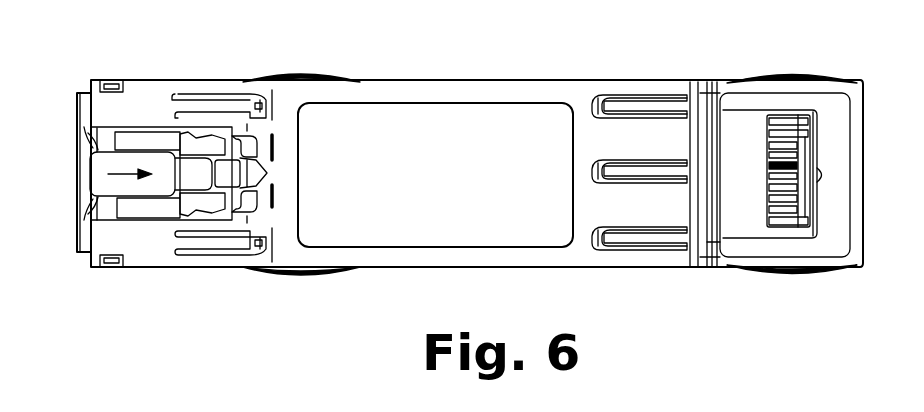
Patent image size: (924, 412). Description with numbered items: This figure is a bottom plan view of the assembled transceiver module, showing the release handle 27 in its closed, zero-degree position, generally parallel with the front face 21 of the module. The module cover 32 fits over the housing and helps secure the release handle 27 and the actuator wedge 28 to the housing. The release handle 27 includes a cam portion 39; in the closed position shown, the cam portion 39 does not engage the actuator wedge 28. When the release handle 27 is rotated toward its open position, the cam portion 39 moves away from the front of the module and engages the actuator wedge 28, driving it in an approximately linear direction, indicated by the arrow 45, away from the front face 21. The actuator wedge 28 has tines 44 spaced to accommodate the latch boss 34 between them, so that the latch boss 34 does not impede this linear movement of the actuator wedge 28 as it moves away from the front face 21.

The front face 21 is at (78, 238).
The release handle 27 is at (76, 132).
The actuator wedge 28 is at (163, 160).
The module cover 32 is at (500, 103).
The latch boss 34 is at (248, 175).
The cam portion 39 is at (76, 173).
The tines 44 is at (212, 147).
The arrow 45 is at (125, 173).